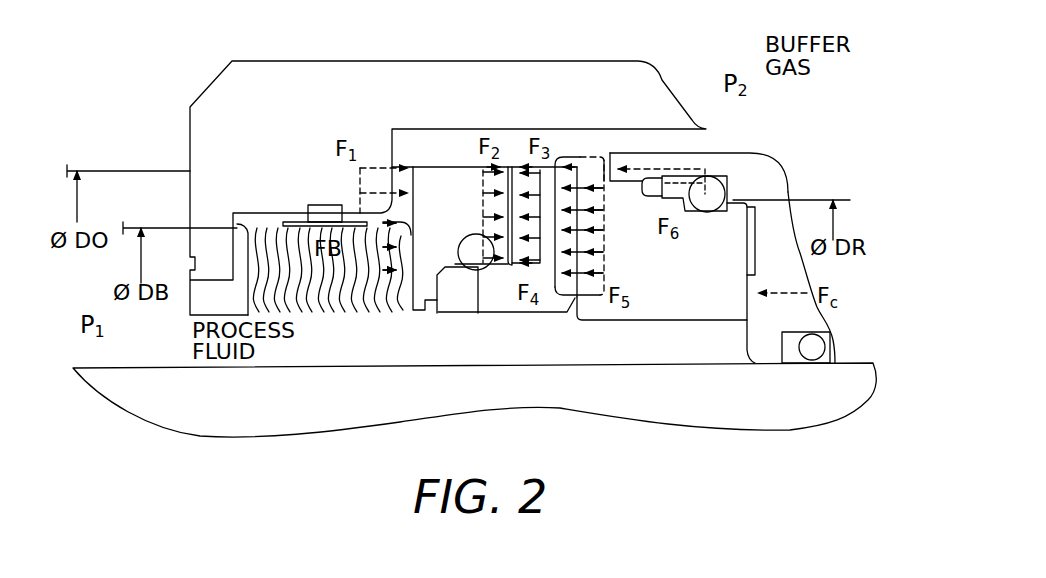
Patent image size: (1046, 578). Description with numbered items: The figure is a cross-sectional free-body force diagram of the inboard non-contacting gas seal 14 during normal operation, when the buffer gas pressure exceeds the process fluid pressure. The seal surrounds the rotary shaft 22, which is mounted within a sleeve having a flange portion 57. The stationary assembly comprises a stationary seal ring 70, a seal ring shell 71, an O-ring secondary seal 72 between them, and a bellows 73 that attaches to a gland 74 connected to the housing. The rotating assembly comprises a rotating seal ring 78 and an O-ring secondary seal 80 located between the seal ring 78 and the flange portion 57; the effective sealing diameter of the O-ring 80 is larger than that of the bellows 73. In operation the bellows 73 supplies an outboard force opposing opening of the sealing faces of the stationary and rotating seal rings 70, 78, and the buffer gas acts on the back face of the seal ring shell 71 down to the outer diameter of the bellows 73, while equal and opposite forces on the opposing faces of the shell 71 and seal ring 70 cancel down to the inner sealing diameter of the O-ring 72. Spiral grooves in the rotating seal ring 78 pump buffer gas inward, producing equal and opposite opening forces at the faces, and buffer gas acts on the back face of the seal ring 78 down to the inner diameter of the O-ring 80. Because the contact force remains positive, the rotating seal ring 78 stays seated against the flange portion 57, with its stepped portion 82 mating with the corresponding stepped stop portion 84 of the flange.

The inboard non-contacting gas seal 14 is at (592, 382).
The rotary shaft 22 is at (788, 407).
The flange portion of sleeve 57 is at (773, 230).
The stationary seal ring 70 is at (503, 300).
The seal ring shell 71 is at (437, 203).
The O-ring secondary seal 72 is at (472, 258).
The bellows 73 is at (327, 300).
The gland 74 is at (233, 118).
The rotating seal ring 78 is at (702, 293).
The O-ring secondary seal 80 is at (717, 190).
The stepped portion 82 is at (615, 205).
The stepped stop portion 84 is at (645, 178).